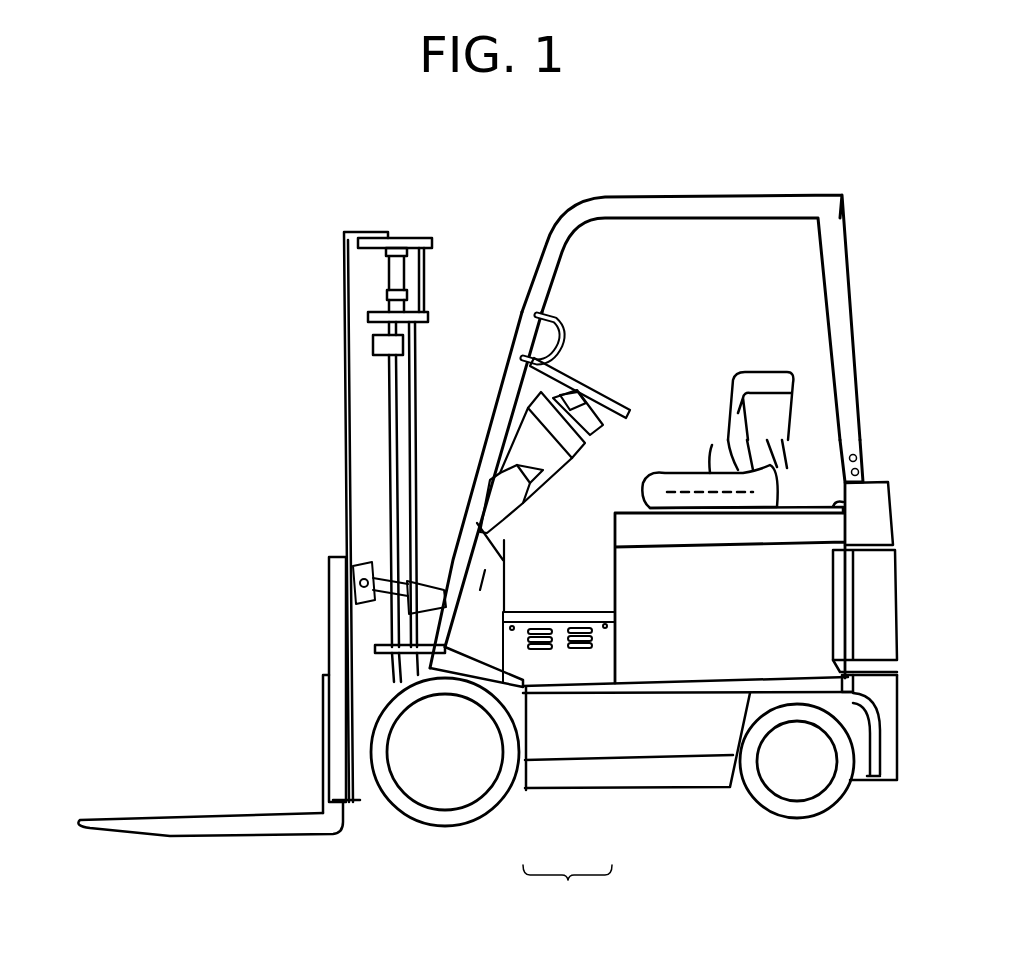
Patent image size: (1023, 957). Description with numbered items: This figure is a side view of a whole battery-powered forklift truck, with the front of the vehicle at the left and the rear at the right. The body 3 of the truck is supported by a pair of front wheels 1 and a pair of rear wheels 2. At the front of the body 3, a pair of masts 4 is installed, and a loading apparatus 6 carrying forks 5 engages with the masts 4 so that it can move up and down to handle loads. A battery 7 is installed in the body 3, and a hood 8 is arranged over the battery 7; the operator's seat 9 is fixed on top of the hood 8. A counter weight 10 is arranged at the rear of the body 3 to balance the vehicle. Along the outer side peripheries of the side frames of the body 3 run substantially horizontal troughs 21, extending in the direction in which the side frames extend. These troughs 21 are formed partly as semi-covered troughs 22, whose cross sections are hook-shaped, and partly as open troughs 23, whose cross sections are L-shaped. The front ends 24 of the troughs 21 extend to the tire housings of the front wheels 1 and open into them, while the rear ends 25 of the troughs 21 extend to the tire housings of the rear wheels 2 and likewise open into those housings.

The front wheels 1 is at (447, 795).
The rear wheels 2 is at (803, 773).
The body 3 is at (664, 742).
The masts 4 is at (360, 339).
The forks 5 is at (173, 823).
The loading apparatus 6 is at (315, 672).
The battery 7 is at (778, 636).
The hood 8 is at (813, 526).
The operator's seat 9 is at (700, 447).
The counter weight 10 is at (880, 588).
The troughs 21 is at (567, 890).
The semi-covered troughs 22 is at (640, 690).
The open troughs 23 is at (550, 690).
The front ends 24 is at (513, 690).
The rear ends 25 is at (857, 680).